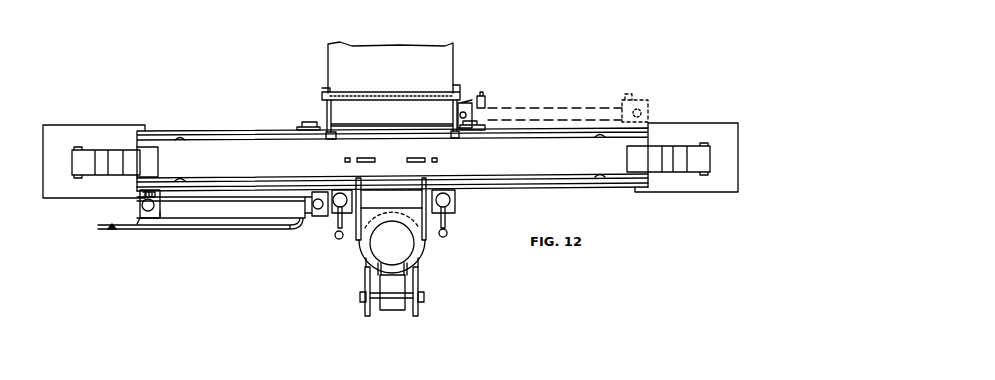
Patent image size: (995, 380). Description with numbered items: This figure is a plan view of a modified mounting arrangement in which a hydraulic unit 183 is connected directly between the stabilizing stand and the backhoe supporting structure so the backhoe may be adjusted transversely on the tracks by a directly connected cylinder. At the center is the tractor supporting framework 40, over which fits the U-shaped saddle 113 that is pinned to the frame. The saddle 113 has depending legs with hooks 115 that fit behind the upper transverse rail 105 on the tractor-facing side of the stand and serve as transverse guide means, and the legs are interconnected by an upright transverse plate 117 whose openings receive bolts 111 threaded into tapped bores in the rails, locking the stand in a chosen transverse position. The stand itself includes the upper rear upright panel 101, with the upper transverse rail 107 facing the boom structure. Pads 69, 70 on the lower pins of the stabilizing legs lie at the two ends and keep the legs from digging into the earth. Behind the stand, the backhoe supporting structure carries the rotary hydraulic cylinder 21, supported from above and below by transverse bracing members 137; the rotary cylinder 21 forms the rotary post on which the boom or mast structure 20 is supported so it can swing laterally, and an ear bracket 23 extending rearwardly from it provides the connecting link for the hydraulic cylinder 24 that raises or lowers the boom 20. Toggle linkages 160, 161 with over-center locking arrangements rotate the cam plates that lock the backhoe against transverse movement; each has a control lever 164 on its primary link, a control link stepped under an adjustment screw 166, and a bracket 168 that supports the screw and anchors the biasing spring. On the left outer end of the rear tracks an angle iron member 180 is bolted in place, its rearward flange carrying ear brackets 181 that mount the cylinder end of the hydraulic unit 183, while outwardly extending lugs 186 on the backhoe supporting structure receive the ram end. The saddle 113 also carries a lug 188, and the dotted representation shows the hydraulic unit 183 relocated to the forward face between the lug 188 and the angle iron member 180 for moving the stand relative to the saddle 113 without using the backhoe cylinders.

The boom or mast structure 20 is at (418, 307).
The rotary type hydraulic cylinder 21 is at (403, 252).
The ear bracket 23 is at (410, 273).
The hydraulic cylinder 24 is at (392, 308).
The supporting framework 40 is at (422, 57).
The pad 69 is at (62, 130).
The pad 70 is at (708, 128).
The upper rear upright panel 101 is at (152, 144).
The upper transverse rail 105 is at (222, 134).
The upper transverse rail 107 is at (510, 186).
The bolt 111 is at (303, 123).
The U-shaped saddle 113 is at (447, 107).
The hook or guide 115 is at (335, 129).
The upright transverse plate 117 is at (323, 128).
The bracing member 137 is at (387, 197).
The toggle linkage 160 is at (347, 228).
The toggle linkage 161 is at (447, 233).
The control lever 164 is at (338, 239).
The adjustment screw 166 is at (330, 190).
The bracket 168 is at (340, 193).
The angle iron member 180 is at (139, 210).
The ear bracket 181 is at (147, 219).
The hydraulic unit 183 is at (547, 113).
The lug 186 is at (322, 216).
The lug 188 is at (471, 106).